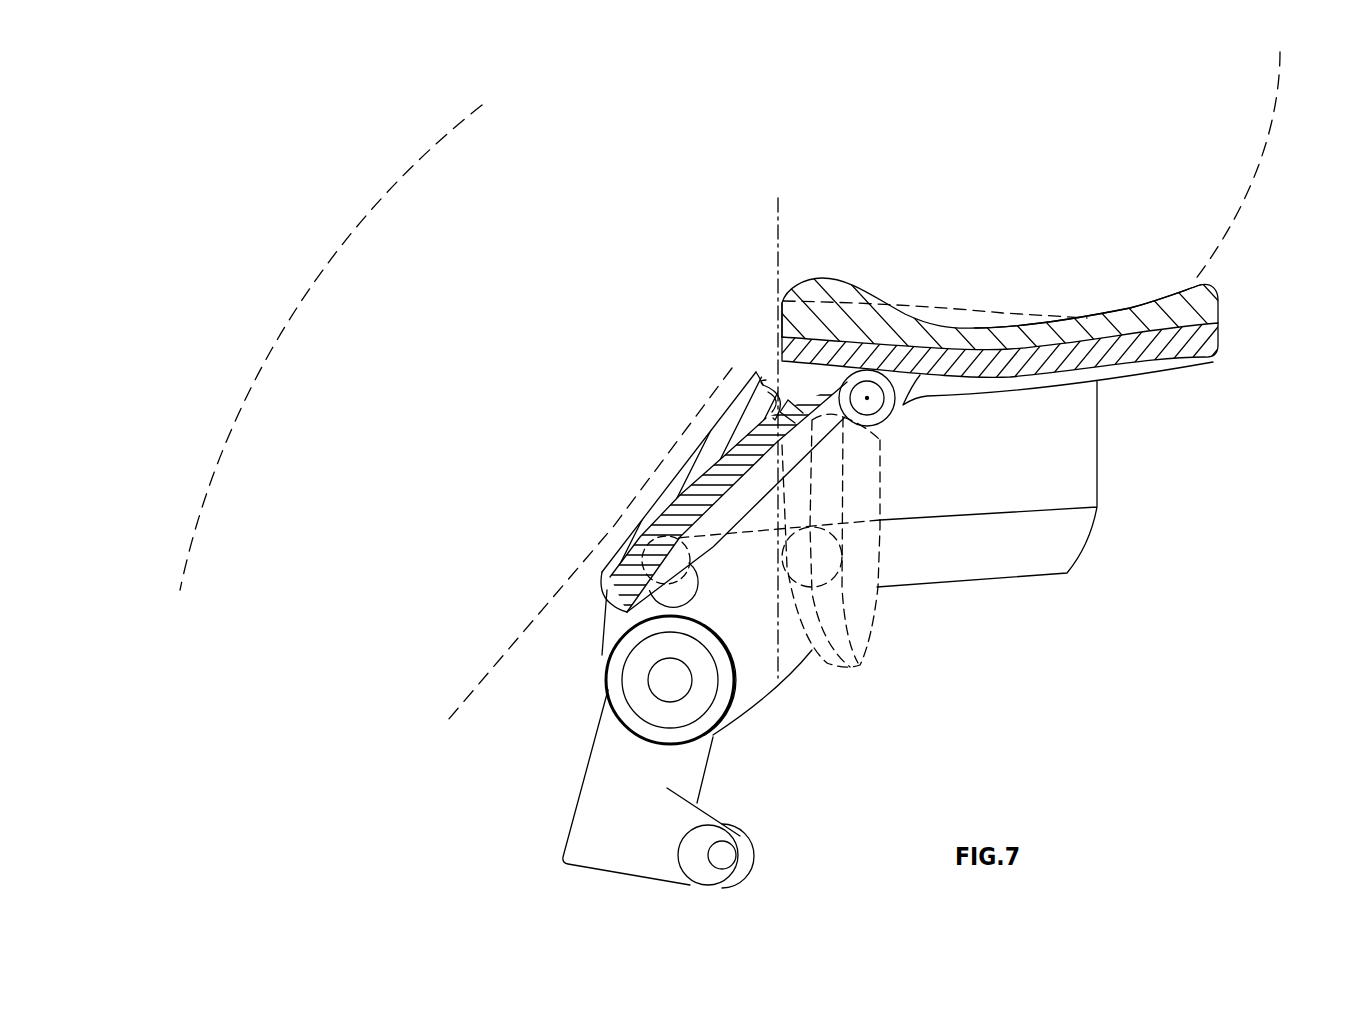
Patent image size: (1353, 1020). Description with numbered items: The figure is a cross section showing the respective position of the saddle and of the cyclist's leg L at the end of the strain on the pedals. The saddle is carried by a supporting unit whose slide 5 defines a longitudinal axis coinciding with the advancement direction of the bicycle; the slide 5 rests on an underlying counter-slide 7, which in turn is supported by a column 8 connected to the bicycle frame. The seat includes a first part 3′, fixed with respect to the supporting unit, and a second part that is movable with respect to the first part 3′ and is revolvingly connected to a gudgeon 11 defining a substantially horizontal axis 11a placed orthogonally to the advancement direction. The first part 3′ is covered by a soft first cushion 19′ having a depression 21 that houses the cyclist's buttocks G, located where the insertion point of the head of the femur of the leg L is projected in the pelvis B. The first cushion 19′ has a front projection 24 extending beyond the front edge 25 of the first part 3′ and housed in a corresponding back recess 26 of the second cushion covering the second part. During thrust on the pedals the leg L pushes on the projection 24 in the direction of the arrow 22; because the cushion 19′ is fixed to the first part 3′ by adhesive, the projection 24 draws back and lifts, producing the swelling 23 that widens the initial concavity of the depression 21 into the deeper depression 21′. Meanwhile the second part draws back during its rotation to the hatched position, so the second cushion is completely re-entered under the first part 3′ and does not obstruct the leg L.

The counter-slide 7 is at (747, 697).
The column 8 is at (597, 817).
The slide 5 is at (1060, 540).
The gudgeon 11 is at (880, 398).
The axis 11a is at (869, 400).
The first part 3′ is at (1210, 360).
The first cushion 19′ is at (1198, 315).
The depression 21 is at (1027, 300).
The deeper depression 21′ is at (929, 300).
The arrow 22 is at (772, 315).
The swelling 23 is at (831, 287).
The front projection 24 is at (778, 302).
The front edge 25 is at (778, 350).
The back recess 26 is at (757, 368).
The cyclist's leg L is at (237, 510).
The cyclist's buttocks G is at (1180, 239).
The pelvis B is at (1033, 138).